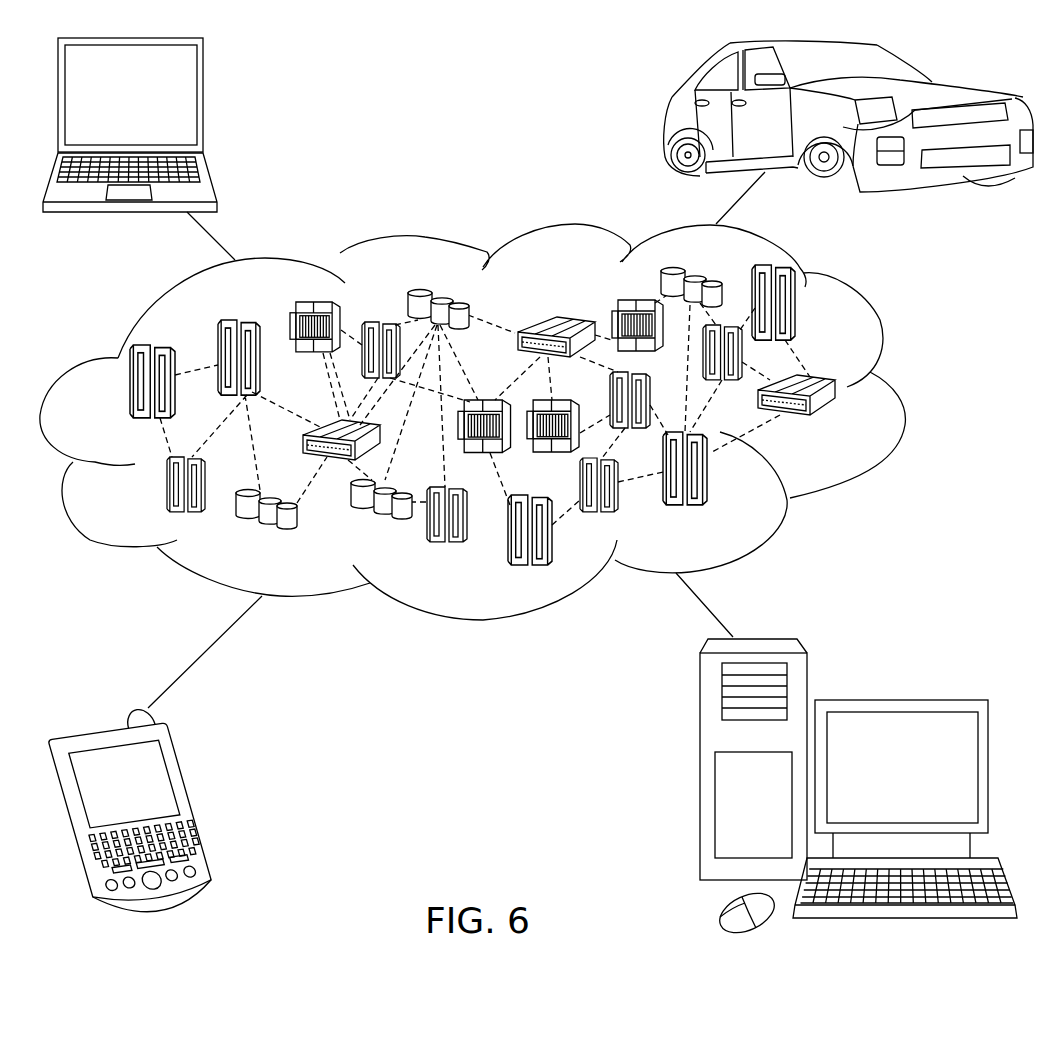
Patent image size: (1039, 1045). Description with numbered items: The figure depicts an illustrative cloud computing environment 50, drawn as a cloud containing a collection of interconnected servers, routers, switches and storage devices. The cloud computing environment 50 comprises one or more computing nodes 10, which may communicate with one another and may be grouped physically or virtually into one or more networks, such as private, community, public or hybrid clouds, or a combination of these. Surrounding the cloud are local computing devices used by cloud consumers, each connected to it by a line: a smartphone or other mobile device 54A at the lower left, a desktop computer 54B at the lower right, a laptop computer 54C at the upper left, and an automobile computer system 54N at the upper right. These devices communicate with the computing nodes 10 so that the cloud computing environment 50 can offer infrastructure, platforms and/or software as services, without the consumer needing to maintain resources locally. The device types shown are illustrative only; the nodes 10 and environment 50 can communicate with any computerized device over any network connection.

The computing node 10 is at (850, 427).
The cloud computing environment 50 is at (895, 391).
The smartphone or other mobile device 54A is at (190, 800).
The desktop computer 54B is at (900, 699).
The laptop computer 54C is at (203, 102).
The automobile computer system 54N is at (668, 120).